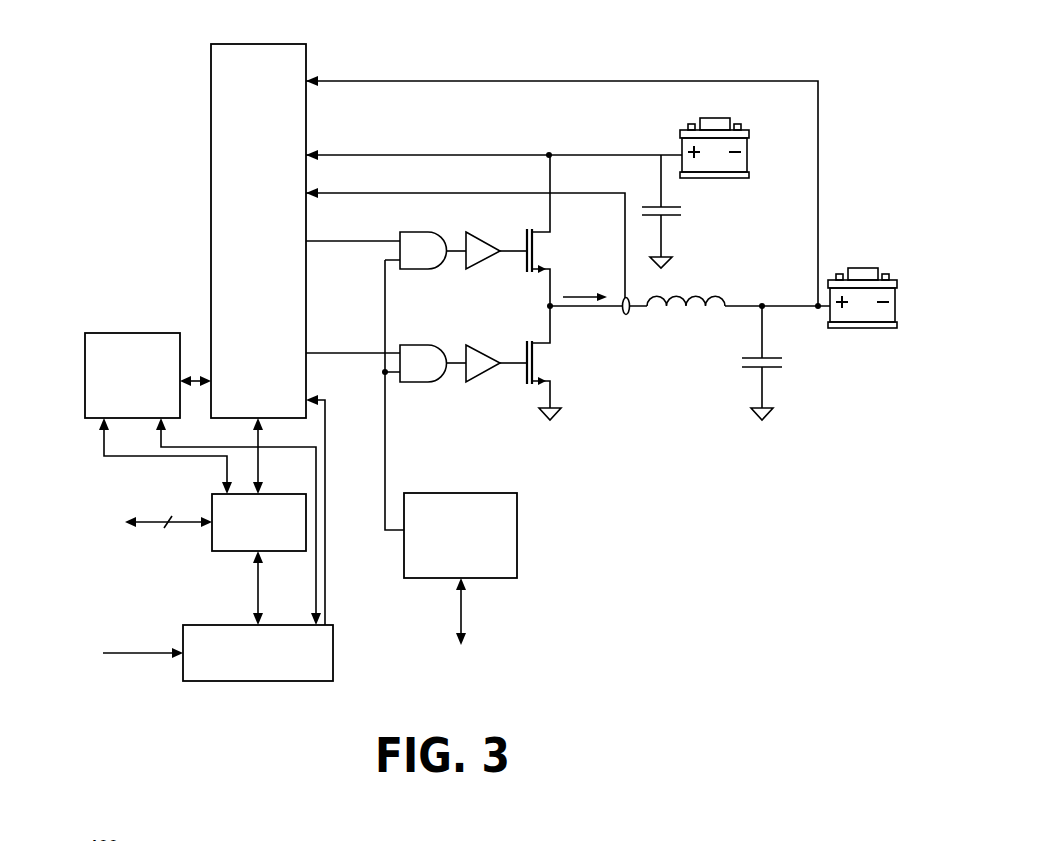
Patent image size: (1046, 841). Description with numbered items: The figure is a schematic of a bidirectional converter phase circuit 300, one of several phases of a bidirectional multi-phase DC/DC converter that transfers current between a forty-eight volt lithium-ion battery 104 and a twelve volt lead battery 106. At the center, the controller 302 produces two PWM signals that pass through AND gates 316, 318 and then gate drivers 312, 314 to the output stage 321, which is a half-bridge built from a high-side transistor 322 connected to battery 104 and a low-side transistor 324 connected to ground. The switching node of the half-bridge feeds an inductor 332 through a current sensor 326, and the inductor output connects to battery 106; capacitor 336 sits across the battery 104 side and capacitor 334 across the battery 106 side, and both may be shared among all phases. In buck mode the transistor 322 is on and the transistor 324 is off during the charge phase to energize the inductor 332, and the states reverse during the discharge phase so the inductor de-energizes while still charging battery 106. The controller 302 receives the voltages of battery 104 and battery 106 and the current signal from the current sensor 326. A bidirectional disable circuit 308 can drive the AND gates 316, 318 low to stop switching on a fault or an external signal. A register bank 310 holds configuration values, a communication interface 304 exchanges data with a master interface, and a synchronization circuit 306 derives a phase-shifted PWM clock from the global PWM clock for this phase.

The bidirectional converter phase circuit 300 is at (70, 148).
The controller 302 is at (284, 44).
The communication interface 304 is at (223, 552).
The synchronization circuit 306 is at (200, 625).
The bidirectional disable circuit 308 is at (462, 493).
The register bank 310 is at (122, 333).
The gate driver 312 is at (483, 232).
The gate driver 314 is at (483, 345).
The AND gate 316 is at (414, 232).
The AND gate 318 is at (414, 345).
The output stage 321 is at (521, 287).
The high-side transistor 322 is at (536, 262).
The low-side transistor 324 is at (536, 375).
The current sensor 326 is at (628, 316).
The inductor 332 is at (680, 297).
The capacitor 334 is at (752, 356).
The capacitor 336 is at (648, 205).
The battery 104 is at (716, 118).
The battery 106 is at (864, 268).